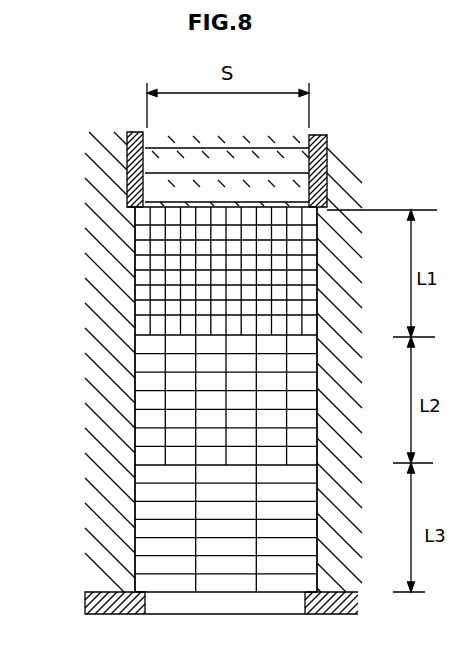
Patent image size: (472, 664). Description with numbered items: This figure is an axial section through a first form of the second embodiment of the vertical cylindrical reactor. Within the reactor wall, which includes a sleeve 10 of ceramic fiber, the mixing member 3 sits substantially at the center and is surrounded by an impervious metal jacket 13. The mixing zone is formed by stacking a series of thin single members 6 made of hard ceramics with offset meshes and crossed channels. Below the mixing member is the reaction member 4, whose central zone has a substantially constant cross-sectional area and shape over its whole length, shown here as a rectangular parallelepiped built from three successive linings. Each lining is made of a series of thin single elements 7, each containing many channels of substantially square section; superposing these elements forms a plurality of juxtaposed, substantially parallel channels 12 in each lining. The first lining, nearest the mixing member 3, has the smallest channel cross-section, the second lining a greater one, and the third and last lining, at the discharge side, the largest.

The mixing member 3 is at (140, 130).
The reaction member 4 is at (128, 367).
The thin single members 6 is at (150, 162).
The thin single elements 7 is at (147, 244).
The sleeve of ceramic fiber 10 is at (355, 210).
The channels 12 is at (157, 263).
The impervious metal jacket 13 is at (328, 156).